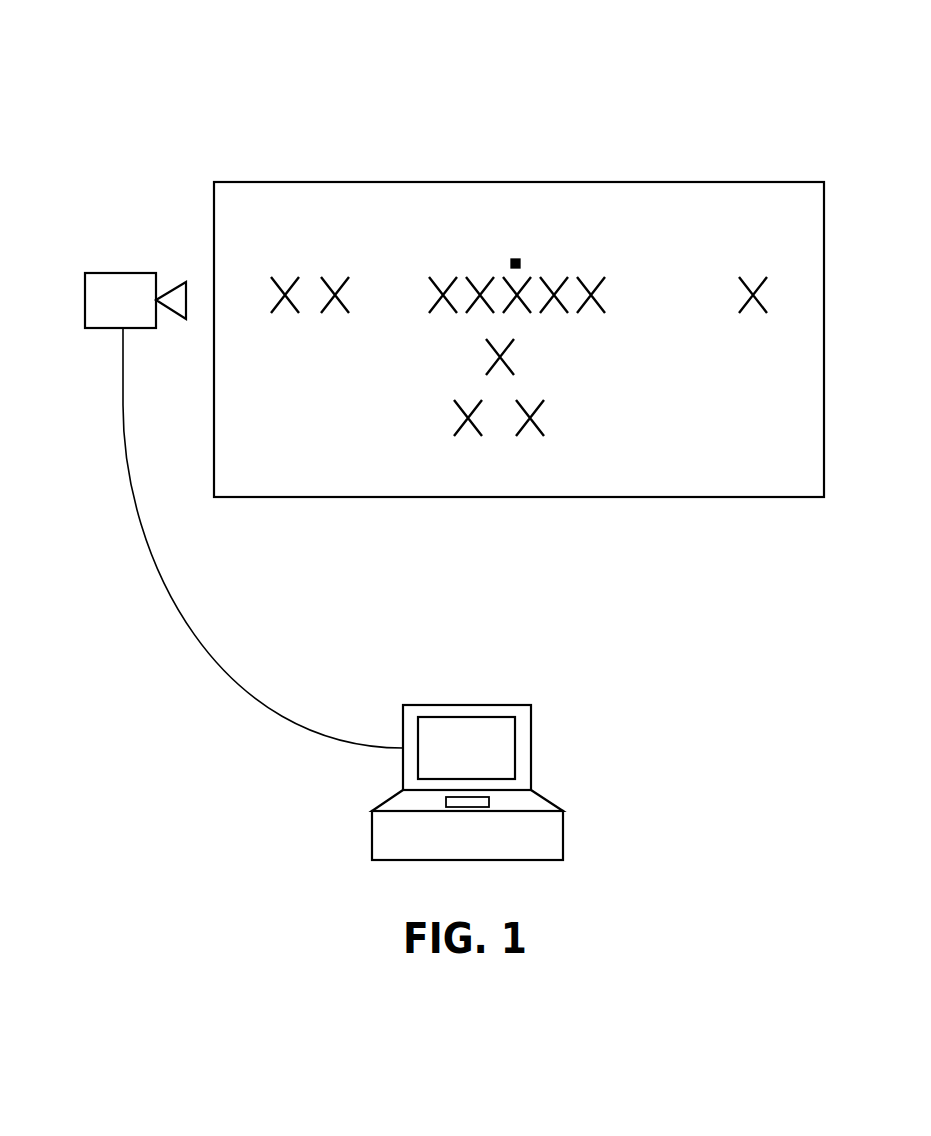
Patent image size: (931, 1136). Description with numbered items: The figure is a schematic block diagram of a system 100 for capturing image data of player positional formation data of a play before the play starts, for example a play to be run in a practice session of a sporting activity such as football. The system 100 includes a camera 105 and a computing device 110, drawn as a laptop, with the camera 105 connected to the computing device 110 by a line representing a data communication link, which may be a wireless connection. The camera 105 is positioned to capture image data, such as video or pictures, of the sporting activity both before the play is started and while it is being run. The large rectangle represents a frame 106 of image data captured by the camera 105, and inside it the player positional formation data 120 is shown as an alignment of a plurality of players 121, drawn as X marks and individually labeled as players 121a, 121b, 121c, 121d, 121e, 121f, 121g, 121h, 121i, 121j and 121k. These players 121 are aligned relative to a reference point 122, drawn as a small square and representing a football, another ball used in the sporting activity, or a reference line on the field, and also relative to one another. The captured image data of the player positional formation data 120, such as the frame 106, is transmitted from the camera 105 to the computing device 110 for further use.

The system 100 is at (300, 82).
The camera 105 is at (121, 306).
The frame 106 is at (650, 182).
The computing device 110 is at (372, 845).
The player positional formation data 120 is at (337, 387).
The player 121 is at (540, 439).
The player 121a is at (542, 403).
The player 121b is at (457, 432).
The player 121c is at (511, 361).
The player 121d is at (602, 309).
The player 121e is at (565, 310).
The player 121f is at (527, 309).
The player 121g is at (468, 310).
The player 121h is at (432, 310).
The player 121i is at (347, 310).
The player 121j is at (295, 310).
The player 121k is at (763, 309).
The reference point 122 is at (515, 259).